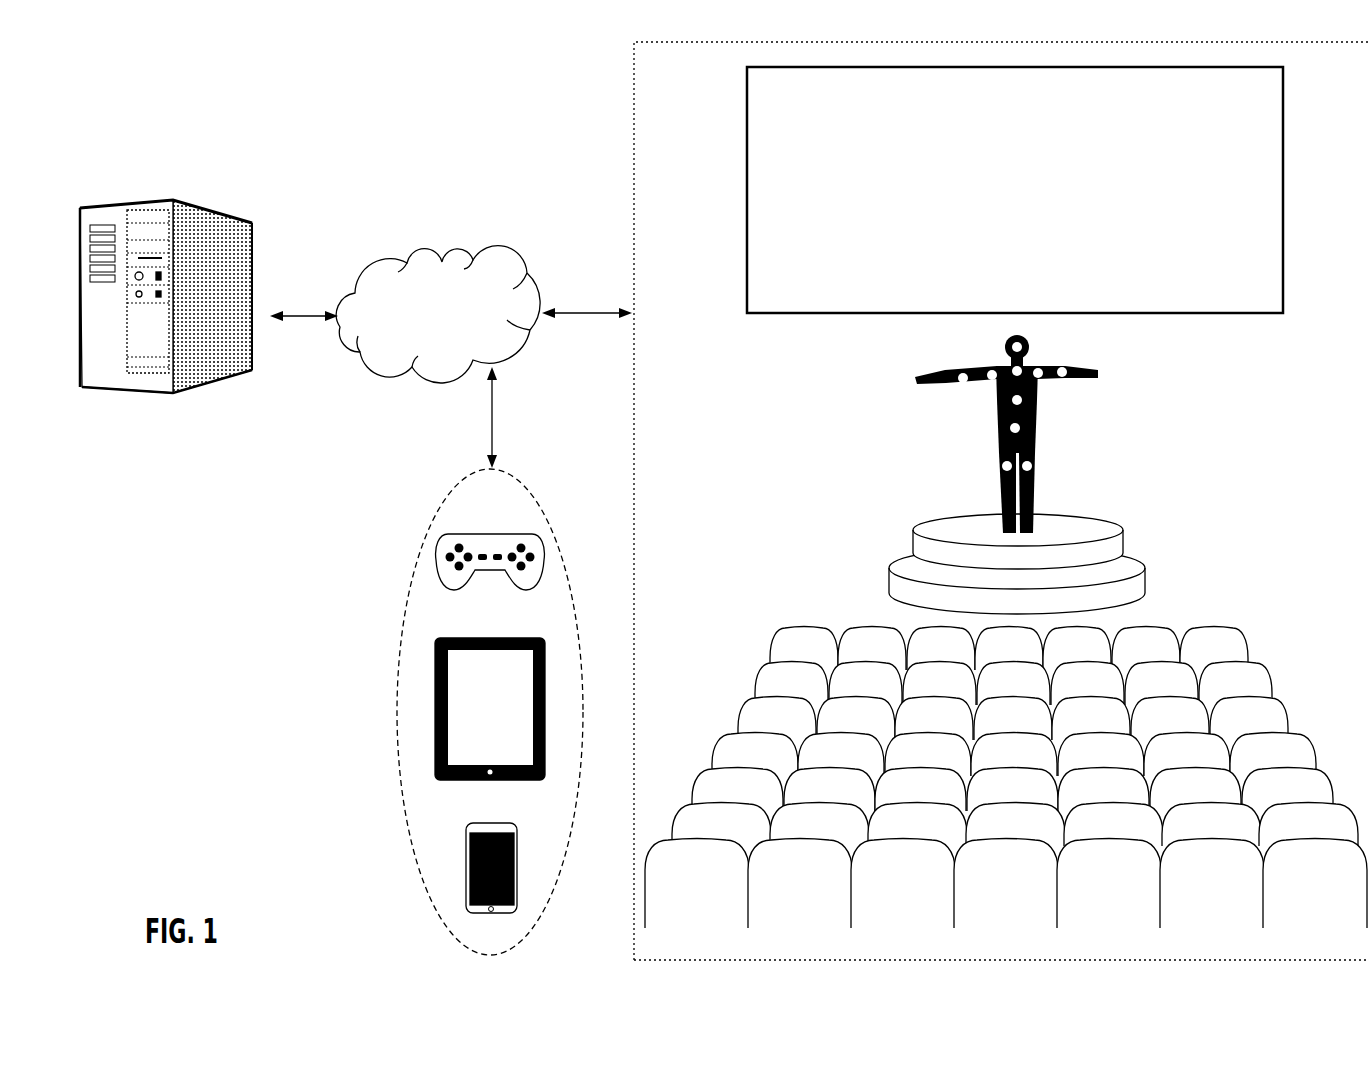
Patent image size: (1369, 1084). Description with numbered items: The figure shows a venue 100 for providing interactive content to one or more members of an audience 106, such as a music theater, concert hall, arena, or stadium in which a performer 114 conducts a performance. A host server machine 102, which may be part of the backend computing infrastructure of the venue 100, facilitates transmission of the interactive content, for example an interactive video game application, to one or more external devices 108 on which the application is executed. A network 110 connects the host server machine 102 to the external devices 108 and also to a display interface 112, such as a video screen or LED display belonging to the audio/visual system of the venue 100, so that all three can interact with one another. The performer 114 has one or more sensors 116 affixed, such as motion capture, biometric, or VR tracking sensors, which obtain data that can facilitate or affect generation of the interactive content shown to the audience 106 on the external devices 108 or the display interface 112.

The venue 100 is at (123, 63).
The host server machine 102 is at (252, 223).
The audience 106 is at (770, 655).
The external devices 108 is at (400, 684).
The network 110 is at (423, 340).
The display interface 112 is at (747, 204).
The performer 114 is at (1045, 431).
The sensors 116 is at (1035, 425).